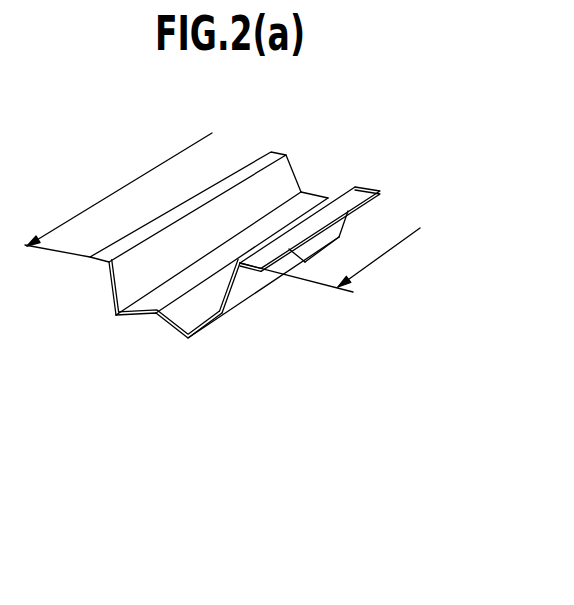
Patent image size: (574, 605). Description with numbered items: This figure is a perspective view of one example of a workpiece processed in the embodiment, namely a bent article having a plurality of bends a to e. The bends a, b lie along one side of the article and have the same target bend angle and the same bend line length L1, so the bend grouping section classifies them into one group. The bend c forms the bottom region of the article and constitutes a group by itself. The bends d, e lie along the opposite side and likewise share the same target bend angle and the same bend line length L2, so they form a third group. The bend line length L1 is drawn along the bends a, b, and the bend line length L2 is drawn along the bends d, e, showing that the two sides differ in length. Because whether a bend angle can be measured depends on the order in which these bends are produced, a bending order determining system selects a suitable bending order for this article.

The bend a is at (180, 213).
The bend b is at (142, 297).
The bend c is at (177, 304).
The bend d is at (252, 297).
The bend e is at (296, 224).
The bend line length L1 is at (132, 183).
The bend line length L2 is at (345, 245).